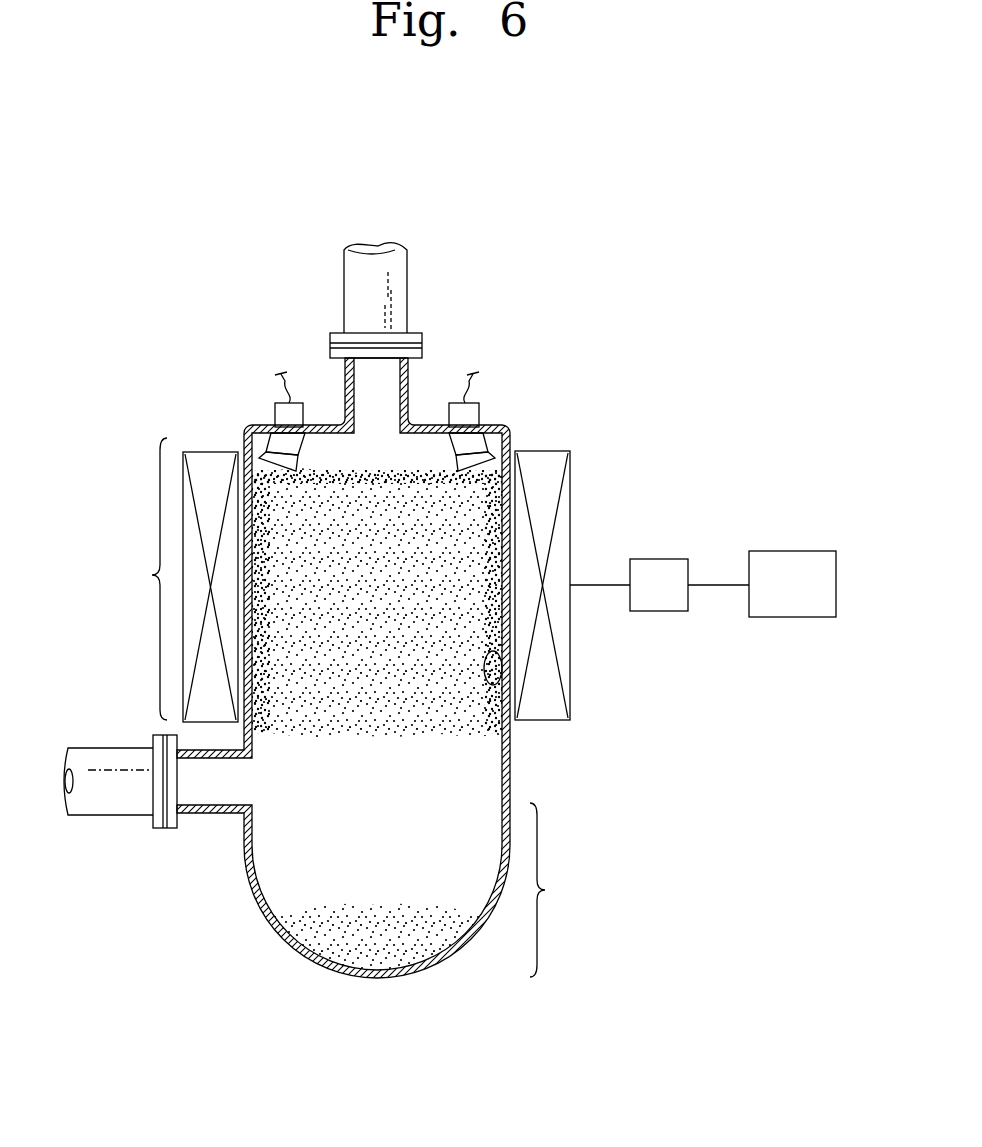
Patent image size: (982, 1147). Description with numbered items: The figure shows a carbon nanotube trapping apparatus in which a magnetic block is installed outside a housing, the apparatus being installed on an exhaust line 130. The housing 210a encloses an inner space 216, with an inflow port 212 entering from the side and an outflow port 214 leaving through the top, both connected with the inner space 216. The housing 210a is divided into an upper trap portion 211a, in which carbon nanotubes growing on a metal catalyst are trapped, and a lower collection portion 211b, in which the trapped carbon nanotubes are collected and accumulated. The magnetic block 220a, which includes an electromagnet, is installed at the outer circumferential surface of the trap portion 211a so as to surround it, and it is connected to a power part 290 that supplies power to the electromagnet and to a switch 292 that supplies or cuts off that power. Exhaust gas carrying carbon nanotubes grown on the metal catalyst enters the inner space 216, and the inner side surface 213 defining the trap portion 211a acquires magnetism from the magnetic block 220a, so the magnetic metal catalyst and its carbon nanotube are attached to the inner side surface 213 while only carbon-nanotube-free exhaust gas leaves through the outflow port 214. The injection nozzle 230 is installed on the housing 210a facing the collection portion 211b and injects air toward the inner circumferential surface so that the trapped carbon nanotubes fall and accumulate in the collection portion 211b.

The exhaust line 130 is at (400, 272).
The housing 210a is at (243, 427).
The trap portion 211a is at (126, 579).
The collection portion 211b is at (567, 890).
The inflow port 212 is at (201, 814).
The inner side surface 213 is at (488, 690).
The outflow port 214 is at (407, 381).
The inner space 216 is at (483, 768).
The magnetic block 220a is at (572, 477).
The injection nozzle 230 is at (481, 411).
The power part 290 is at (792, 550).
The switch 292 is at (662, 558).